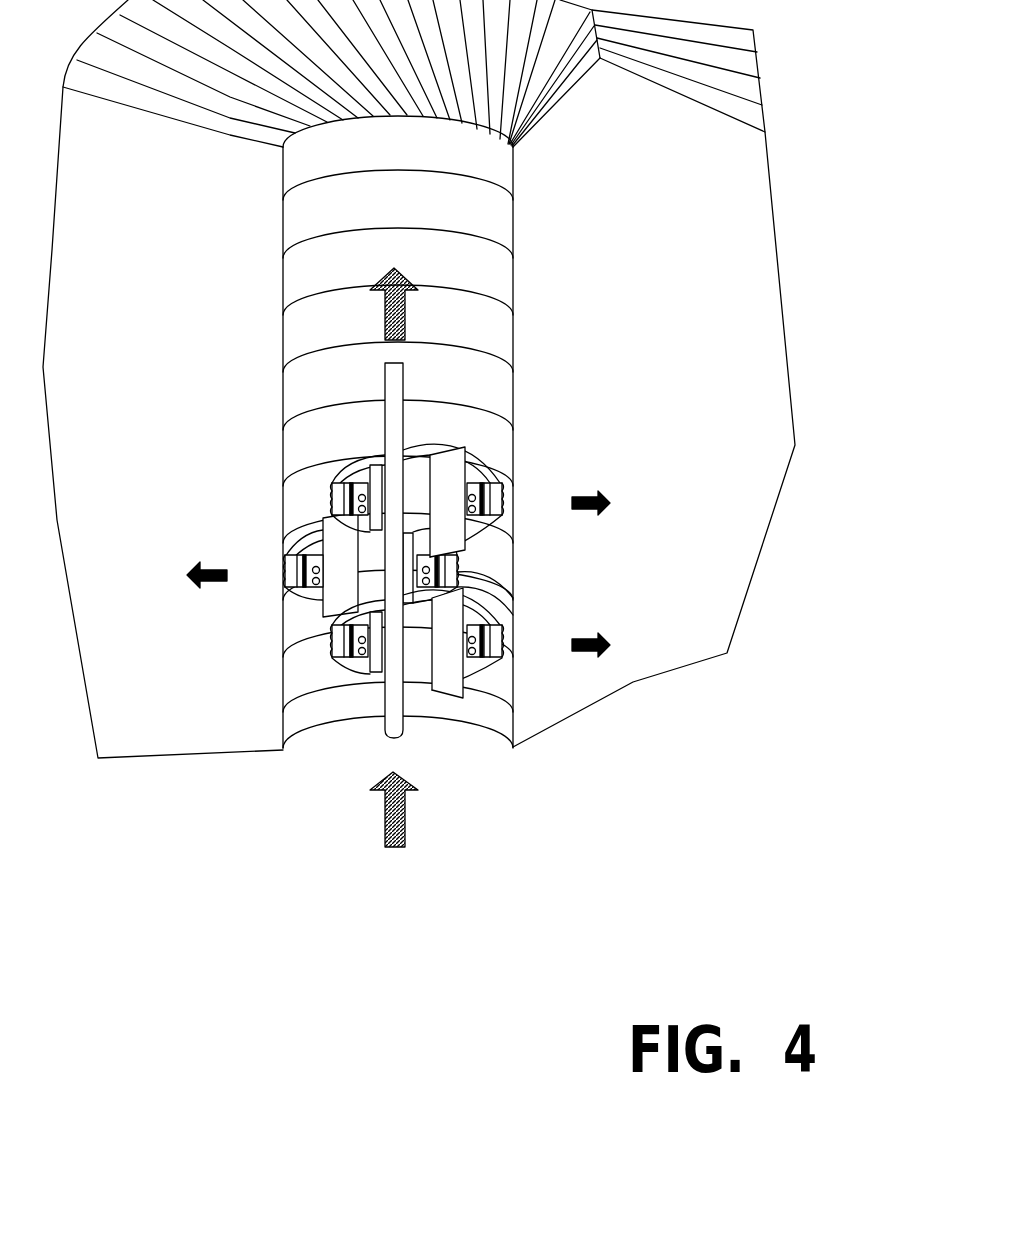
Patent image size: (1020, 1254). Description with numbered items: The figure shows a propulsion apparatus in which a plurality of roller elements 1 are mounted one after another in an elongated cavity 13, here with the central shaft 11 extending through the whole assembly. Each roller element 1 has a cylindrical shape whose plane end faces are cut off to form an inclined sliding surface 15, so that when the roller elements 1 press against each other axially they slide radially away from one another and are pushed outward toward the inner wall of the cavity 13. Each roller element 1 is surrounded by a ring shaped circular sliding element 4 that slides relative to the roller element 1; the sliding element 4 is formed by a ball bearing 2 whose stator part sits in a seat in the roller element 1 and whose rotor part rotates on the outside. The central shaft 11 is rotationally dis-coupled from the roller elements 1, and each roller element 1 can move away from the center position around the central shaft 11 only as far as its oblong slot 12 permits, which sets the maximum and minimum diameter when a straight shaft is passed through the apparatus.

The roller element 1 is at (472, 437).
The ball bearing 2 is at (473, 663).
The sliding element 4 is at (503, 497).
The central shaft 11 is at (413, 393).
The oblong slot 12 is at (343, 480).
The elongated cavity 13 is at (520, 717).
The inclined sliding surface 15 is at (343, 663).